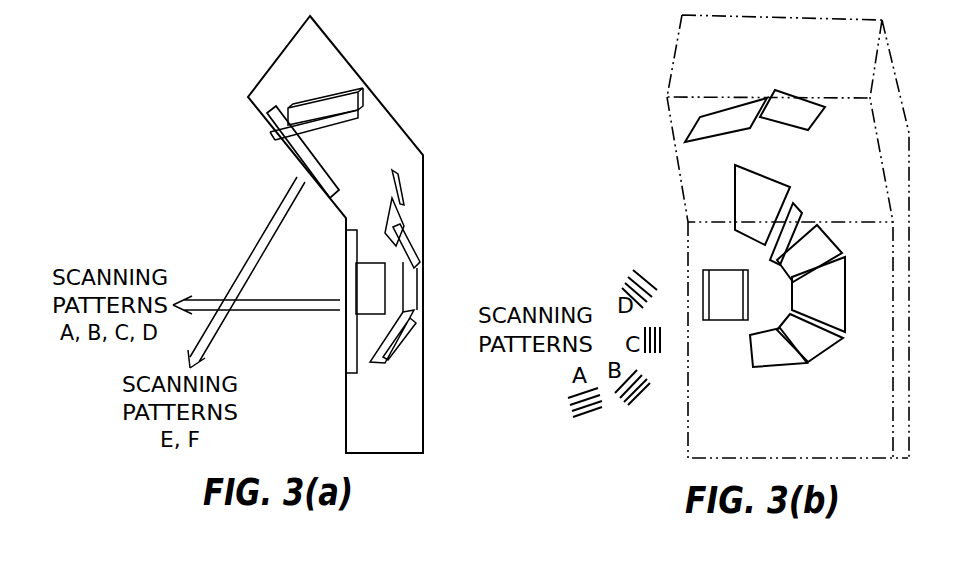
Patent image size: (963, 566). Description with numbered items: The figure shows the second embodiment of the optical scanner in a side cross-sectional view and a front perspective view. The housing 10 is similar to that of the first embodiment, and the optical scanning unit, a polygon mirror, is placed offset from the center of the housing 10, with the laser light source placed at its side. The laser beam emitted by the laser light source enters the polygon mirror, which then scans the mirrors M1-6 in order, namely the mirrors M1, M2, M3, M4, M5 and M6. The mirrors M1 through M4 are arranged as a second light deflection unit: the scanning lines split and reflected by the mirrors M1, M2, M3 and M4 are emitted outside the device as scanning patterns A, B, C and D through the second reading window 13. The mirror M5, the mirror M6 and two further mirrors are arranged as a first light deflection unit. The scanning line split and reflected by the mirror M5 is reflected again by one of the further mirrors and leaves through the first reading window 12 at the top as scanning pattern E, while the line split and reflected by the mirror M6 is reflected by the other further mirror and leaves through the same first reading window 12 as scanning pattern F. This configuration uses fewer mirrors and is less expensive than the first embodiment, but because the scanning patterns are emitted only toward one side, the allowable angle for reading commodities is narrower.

The housing 10 is at (345, 58).
The first reading window 12 is at (288, 150).
The second reading window 13 is at (346, 360).
The mirror M1 is at (770, 367).
The mirror M2 is at (823, 343).
The mirror M3 is at (838, 295).
The mirror M4 is at (822, 243).
The mirror M5 is at (788, 218).
The mirror M6 is at (755, 182).
The mirrors M1-6 is at (433, 200).